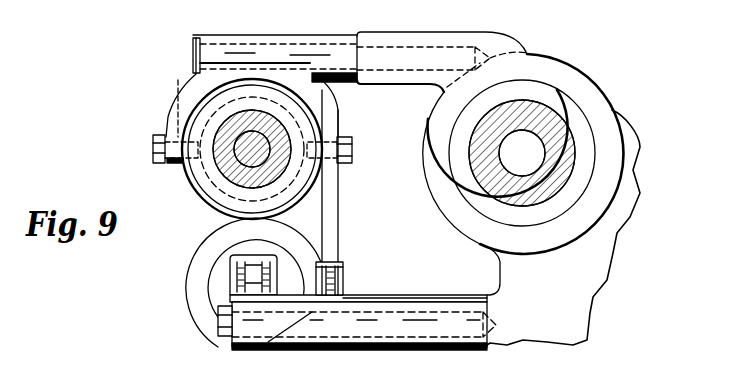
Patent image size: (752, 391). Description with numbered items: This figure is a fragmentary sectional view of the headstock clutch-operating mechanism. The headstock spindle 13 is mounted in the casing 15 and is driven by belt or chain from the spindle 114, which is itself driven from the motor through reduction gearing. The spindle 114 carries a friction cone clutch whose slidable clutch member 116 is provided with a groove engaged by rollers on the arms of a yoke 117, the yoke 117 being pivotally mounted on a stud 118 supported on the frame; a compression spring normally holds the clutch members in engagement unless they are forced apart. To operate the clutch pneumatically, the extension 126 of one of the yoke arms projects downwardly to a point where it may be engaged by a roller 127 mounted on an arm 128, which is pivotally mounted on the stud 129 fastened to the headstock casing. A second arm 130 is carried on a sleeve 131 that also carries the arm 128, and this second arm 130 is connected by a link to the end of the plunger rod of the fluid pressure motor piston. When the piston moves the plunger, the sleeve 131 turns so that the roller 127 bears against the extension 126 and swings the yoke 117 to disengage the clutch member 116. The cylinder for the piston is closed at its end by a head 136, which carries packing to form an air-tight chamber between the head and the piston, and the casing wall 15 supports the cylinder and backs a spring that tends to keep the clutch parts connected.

The headstock spindle 13 is at (552, 178).
The casing 15 is at (628, 135).
The spindle 114 is at (240, 158).
The slidable clutch member 116 is at (213, 163).
The yoke 117 is at (185, 107).
The stud 118 is at (197, 44).
The extension of yoke arm 126 is at (334, 199).
The roller 127 is at (328, 262).
The arm 128 is at (343, 283).
The stud 129 is at (219, 324).
The second arm 130 is at (231, 289).
The sleeve 131 is at (297, 347).
The head 136 is at (215, 260).